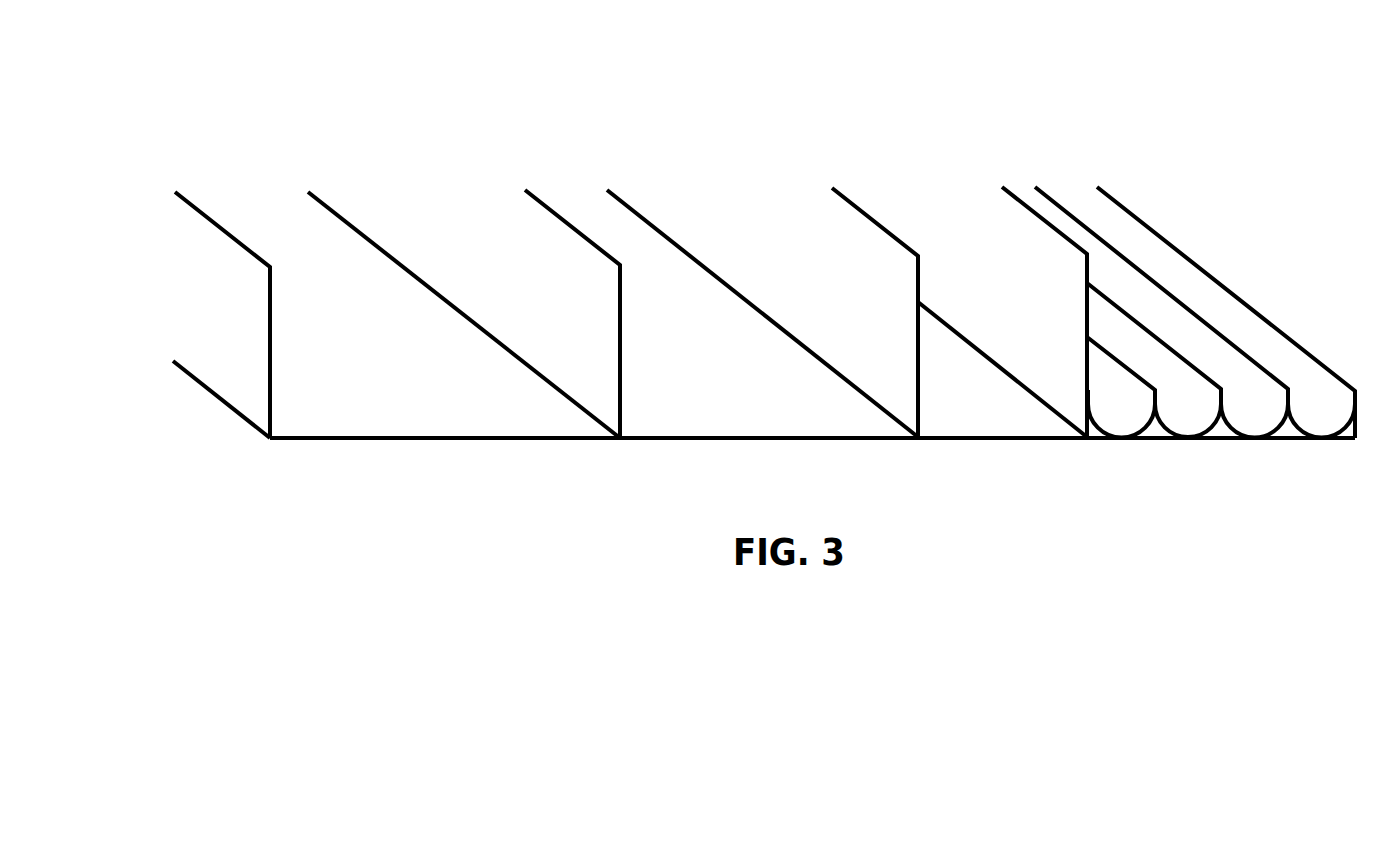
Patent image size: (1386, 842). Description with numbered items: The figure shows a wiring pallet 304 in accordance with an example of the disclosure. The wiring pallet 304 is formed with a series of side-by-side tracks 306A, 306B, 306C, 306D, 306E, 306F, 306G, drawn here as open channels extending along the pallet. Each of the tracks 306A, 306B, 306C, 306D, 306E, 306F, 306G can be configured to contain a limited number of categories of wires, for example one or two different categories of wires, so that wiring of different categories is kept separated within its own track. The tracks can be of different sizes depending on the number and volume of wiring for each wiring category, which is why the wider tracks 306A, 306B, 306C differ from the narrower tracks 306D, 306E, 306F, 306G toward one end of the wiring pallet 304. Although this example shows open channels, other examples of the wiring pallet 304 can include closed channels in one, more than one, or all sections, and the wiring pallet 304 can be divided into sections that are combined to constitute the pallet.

The wiring pallet 304 is at (449, 77).
The track 306A is at (435, 413).
The track 306B is at (754, 413).
The track 306C is at (995, 412).
The track 306D is at (1123, 410).
The track 306E is at (1205, 420).
The track 306F is at (1265, 410).
The track 306G is at (1340, 412).